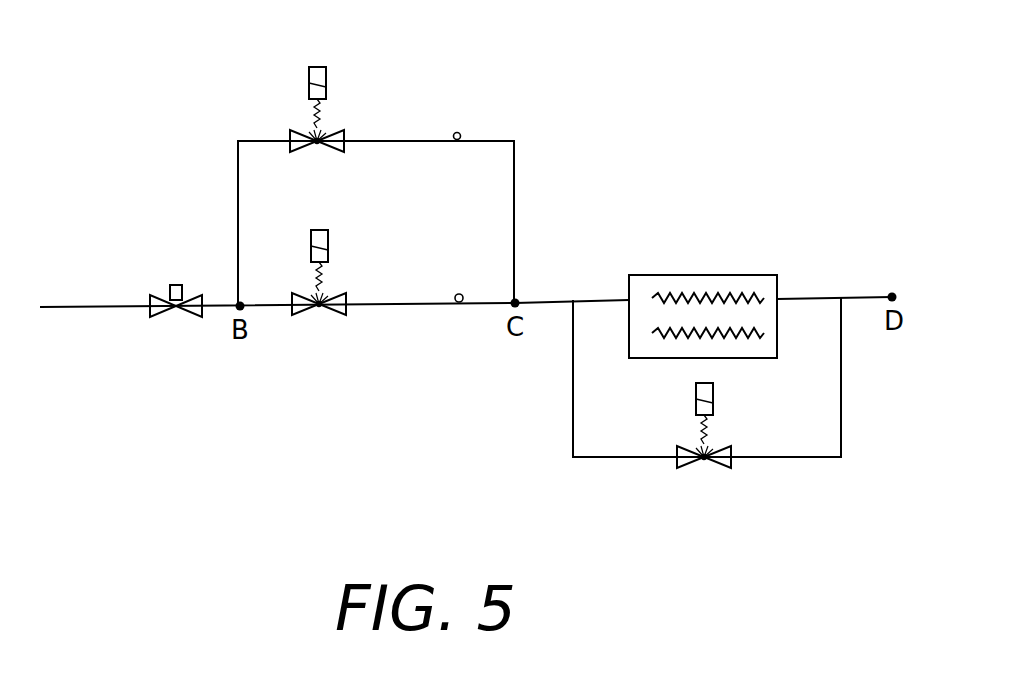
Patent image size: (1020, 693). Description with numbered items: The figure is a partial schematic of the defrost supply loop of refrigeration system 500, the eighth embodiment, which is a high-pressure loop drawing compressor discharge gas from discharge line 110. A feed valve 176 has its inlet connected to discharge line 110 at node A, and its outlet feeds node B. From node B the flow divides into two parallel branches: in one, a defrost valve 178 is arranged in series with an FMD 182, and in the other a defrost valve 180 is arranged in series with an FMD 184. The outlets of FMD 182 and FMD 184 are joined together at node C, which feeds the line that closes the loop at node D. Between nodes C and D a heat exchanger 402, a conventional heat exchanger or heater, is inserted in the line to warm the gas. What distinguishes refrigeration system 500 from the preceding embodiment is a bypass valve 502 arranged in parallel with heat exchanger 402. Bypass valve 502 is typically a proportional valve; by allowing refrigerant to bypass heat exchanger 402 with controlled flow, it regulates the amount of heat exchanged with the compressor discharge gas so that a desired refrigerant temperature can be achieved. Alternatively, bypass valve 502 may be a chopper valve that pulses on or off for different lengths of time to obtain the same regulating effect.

The discharge line 110 is at (108, 305).
The feed valve 176 is at (193, 312).
The defrost valve 178 is at (338, 313).
The defrost valve 180 is at (333, 147).
The FMD 182 is at (455, 295).
The FMD 184 is at (460, 132).
The heat exchanger 402 is at (678, 275).
The refrigeration system 500 is at (655, 73).
The bypass valve 502 is at (688, 465).